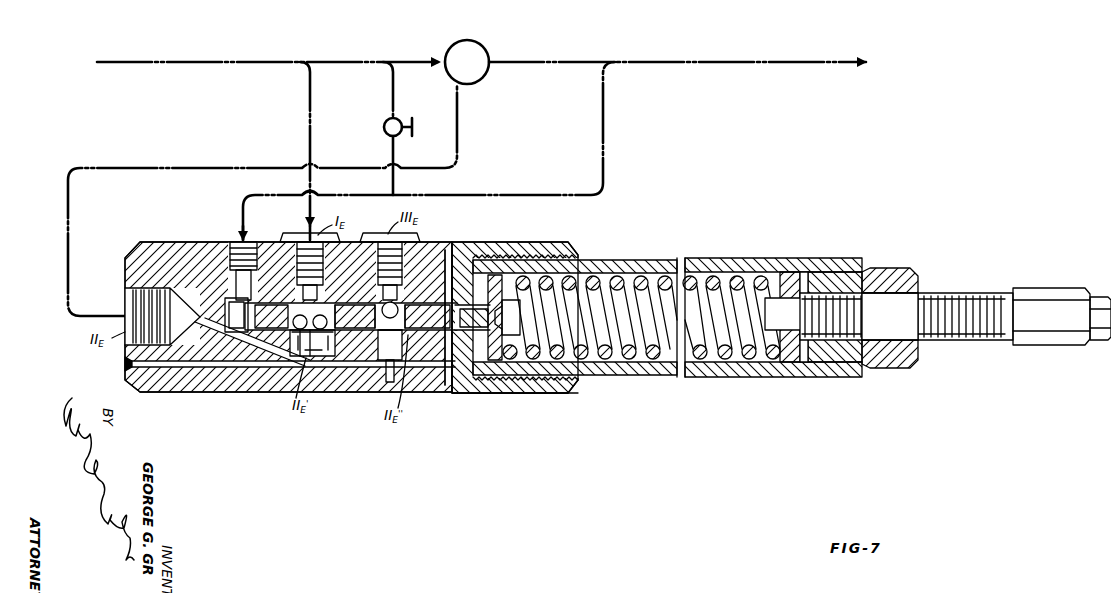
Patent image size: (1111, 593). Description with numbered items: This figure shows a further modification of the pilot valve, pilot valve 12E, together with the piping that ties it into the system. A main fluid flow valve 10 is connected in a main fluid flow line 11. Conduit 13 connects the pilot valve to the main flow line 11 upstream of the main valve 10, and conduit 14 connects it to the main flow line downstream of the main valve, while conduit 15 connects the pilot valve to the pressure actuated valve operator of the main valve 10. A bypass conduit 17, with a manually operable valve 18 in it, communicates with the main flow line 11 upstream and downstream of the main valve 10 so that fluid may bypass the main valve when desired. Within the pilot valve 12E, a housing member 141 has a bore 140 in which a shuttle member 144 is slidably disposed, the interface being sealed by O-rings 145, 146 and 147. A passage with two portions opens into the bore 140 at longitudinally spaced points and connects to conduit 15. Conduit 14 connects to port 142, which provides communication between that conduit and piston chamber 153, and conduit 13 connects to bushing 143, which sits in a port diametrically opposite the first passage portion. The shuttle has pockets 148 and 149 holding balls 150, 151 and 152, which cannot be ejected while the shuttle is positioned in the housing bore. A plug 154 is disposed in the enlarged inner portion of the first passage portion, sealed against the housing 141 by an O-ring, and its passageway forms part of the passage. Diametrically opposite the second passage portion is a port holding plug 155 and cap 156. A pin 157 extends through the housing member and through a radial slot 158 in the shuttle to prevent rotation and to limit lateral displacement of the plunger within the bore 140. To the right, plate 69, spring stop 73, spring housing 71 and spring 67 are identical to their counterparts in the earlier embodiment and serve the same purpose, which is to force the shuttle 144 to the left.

The main fluid flow valve 10 is at (490, 44).
The main fluid flow line 11 is at (233, 42).
The conduit 13 is at (313, 106).
The conduit 14 is at (605, 116).
The conduit 15 is at (144, 166).
The bypass conduit 17 is at (394, 103).
The manually operable valve 18 is at (383, 127).
The housing member 141 is at (291, 317).
The port 142 is at (235, 243).
The bushing 143 is at (298, 242).
The piston chamber 153 is at (232, 300).
The O-ring 145 is at (296, 336).
The pocket 148 is at (314, 345).
The O-ring 146 is at (382, 326).
The bore 140 is at (386, 370).
The ball 150 is at (302, 356).
The plug 154 is at (314, 350).
The ball 151 is at (322, 350).
The shuttle member 144 is at (343, 332).
The ball 152 is at (373, 340).
The pocket 149 is at (396, 340).
The O-ring 147 is at (420, 332).
The plug 155 is at (466, 316).
The cap 156 is at (433, 278).
The pin 157 is at (495, 280).
The radial slot 158 is at (528, 262).
The spring stop 73 is at (498, 380).
The plate 69 is at (474, 380).
The spring 67 is at (618, 360).
The spring housing 71 is at (661, 378).
The pilot valve 12E is at (584, 398).